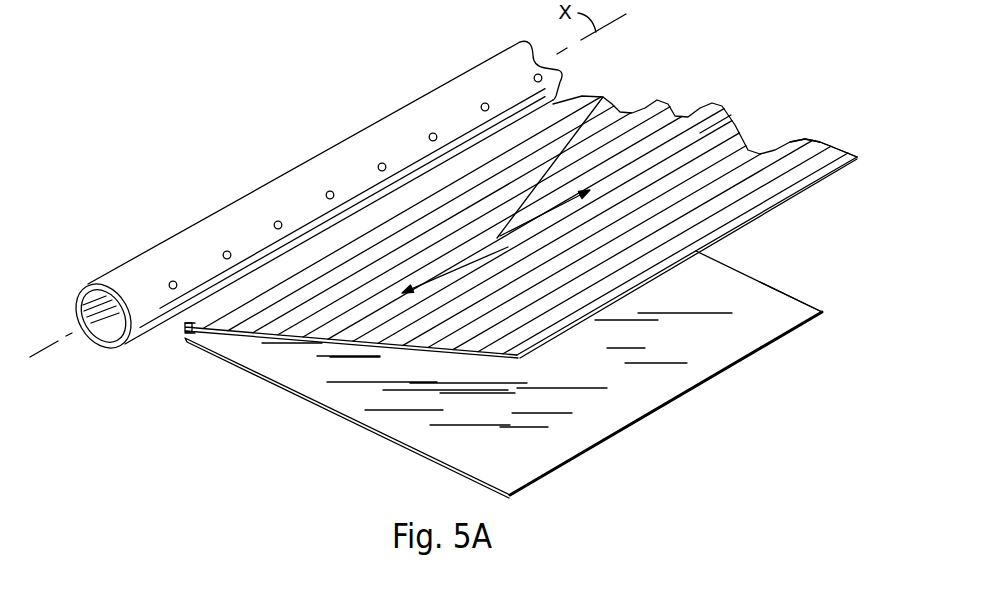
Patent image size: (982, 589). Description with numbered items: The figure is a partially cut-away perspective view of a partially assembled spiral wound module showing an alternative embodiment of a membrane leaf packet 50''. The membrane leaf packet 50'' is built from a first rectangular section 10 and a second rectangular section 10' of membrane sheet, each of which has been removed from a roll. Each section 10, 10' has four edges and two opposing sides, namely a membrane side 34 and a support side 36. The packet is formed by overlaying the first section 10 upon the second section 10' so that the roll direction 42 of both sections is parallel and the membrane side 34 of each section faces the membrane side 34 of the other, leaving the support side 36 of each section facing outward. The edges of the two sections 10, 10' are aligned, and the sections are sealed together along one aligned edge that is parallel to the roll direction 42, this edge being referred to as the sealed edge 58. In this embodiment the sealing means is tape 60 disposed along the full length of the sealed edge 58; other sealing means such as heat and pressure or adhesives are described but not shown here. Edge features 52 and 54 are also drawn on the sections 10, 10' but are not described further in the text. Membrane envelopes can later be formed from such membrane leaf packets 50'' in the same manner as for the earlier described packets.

The first rectangular section 10 is at (521, 224).
The second rectangular section 10' is at (503, 370).
The membrane side 34 is at (651, 402).
The support side 36 is at (719, 130).
The roll direction 42 is at (617, 102).
The membrane leaf packet 50'' is at (195, 423).
The edge of corrugated sheet 52 is at (824, 141).
The edge of flat sheet 54 is at (791, 296).
The sealed edge 58 is at (189, 337).
The tape 60 is at (191, 315).